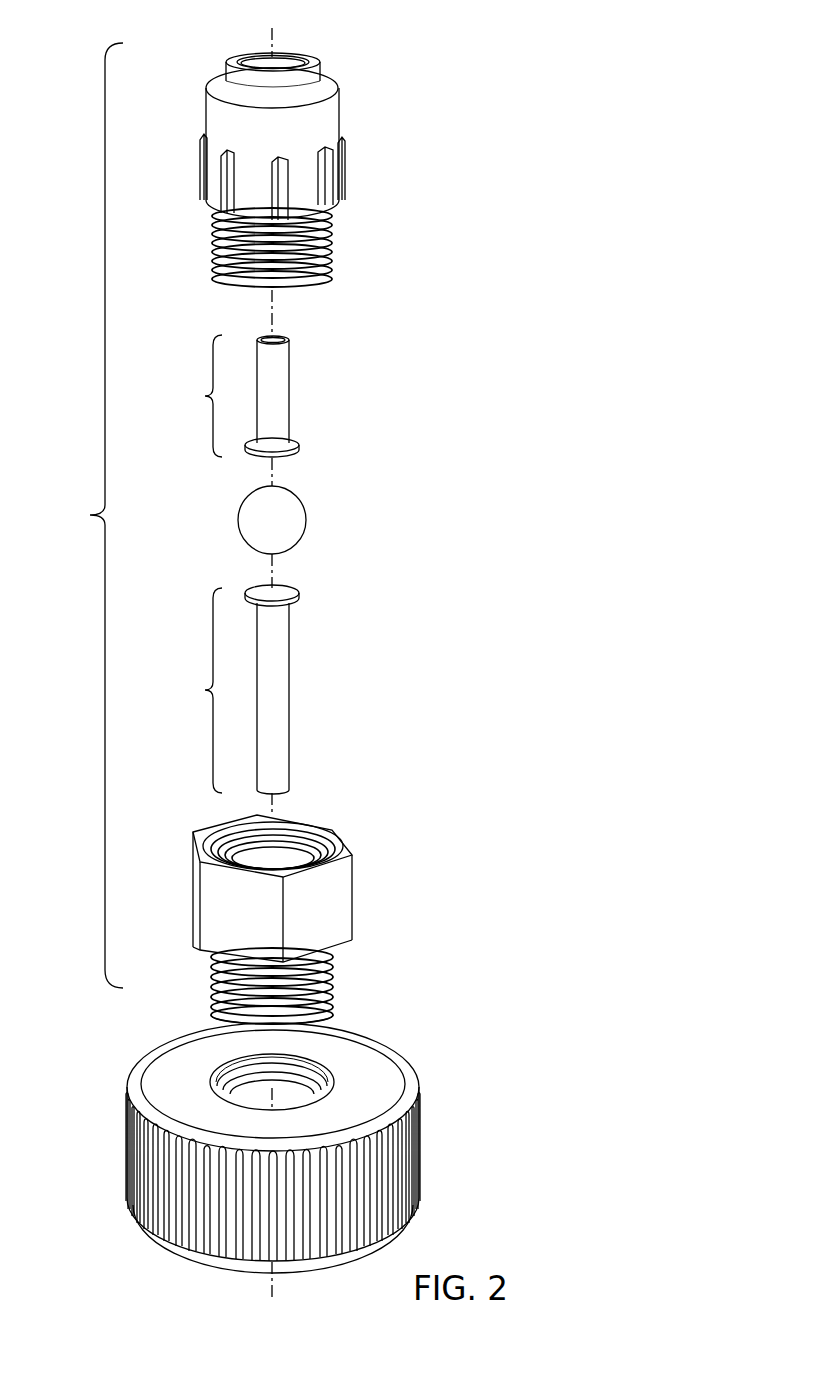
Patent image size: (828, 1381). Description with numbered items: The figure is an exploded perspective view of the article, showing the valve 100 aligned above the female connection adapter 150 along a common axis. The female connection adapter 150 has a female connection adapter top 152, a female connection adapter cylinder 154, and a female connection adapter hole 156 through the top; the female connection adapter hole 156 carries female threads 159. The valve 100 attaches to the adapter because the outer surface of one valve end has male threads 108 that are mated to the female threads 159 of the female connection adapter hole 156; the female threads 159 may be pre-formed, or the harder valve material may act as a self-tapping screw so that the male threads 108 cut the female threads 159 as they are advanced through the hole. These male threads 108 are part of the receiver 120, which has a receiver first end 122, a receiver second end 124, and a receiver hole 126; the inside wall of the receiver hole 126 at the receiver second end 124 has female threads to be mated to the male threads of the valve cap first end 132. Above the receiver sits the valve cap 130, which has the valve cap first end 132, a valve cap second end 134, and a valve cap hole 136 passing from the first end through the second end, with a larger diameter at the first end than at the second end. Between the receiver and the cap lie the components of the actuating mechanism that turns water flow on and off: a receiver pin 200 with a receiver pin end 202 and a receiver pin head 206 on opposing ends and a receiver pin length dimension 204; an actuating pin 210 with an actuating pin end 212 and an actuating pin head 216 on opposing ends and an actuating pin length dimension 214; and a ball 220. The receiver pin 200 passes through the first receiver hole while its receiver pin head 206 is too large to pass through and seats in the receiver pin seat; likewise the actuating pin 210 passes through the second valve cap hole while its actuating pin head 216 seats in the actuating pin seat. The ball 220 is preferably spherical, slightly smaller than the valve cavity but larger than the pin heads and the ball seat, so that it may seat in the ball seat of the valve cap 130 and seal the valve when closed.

The valve 100 is at (88, 515).
The male threads 108 is at (216, 976).
The receiver 120 is at (352, 892).
The receiver first end 122 is at (250, 1022).
The receiver second end 124 is at (337, 838).
The receiver hole 126 is at (295, 846).
The valve cap 130 is at (343, 152).
The valve cap first end 132 is at (223, 276).
The valve cap second end 134 is at (308, 58).
The valve cap hole 136 is at (283, 63).
The female connection adapter 150 is at (405, 1063).
The female connection adapter top 152 is at (355, 1047).
The female connection adapter cylinder 154 is at (417, 1140).
The female connection adapter hole 156 is at (293, 1095).
The female threads 159 is at (247, 1072).
The receiver pin 200 is at (290, 690).
The receiver pin end 202 is at (287, 796).
The receiver pin length dimension 204 is at (195, 690).
The receiver pin head 206 is at (298, 596).
The actuating pin 210 is at (290, 375).
The actuating pin end 212 is at (285, 338).
The actuating pin length dimension 214 is at (195, 396).
The actuating pin head 216 is at (298, 448).
The ball 220 is at (306, 520).